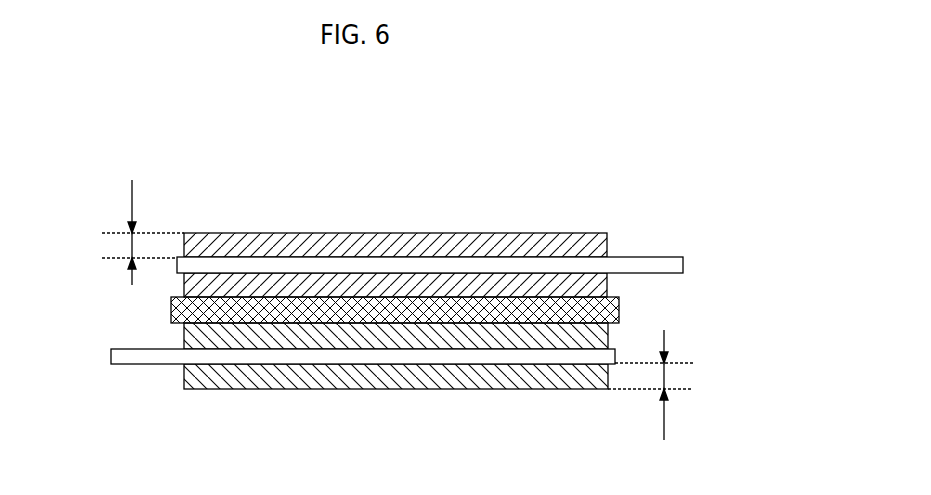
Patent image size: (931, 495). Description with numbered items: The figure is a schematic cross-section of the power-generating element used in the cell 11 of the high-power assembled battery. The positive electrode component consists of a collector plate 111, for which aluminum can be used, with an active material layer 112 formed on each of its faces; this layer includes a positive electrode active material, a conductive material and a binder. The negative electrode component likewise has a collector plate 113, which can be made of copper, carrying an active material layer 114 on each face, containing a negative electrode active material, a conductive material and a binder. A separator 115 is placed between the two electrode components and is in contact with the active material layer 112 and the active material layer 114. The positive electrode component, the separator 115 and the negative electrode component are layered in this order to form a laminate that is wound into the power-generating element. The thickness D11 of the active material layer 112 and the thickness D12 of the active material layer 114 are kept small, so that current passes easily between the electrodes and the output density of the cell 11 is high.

The cell 11 is at (721, 192).
The collector plate 111 is at (646, 265).
The active material layer 112 is at (375, 285).
The collector plate 113 is at (148, 357).
The active material layer 114 is at (445, 328).
The separator 115 is at (620, 313).
The thickness of the active material layer 112 D11 is at (137, 232).
The thickness of the active material layer 114 D12 is at (655, 385).